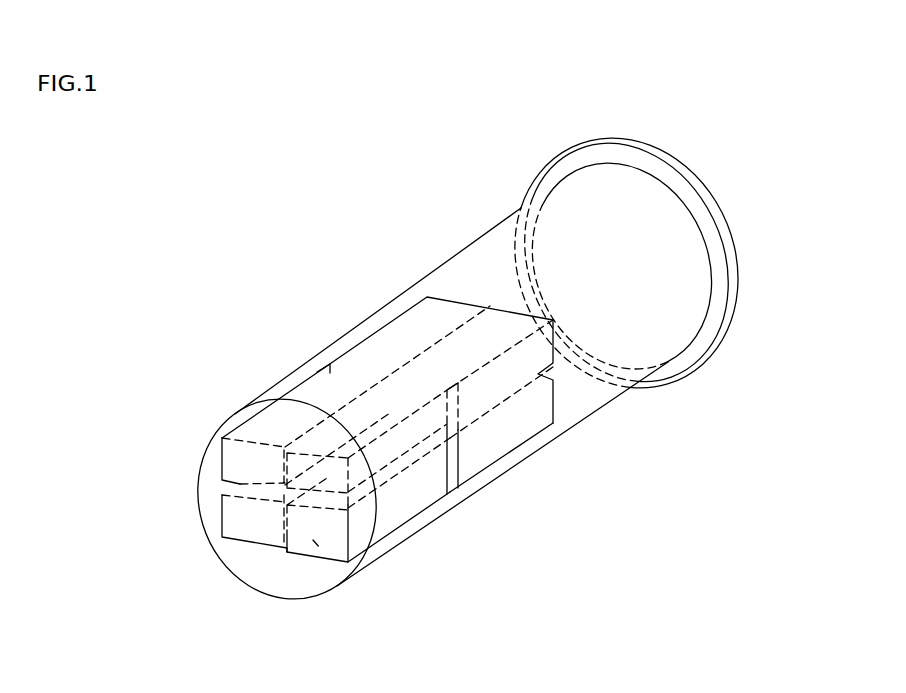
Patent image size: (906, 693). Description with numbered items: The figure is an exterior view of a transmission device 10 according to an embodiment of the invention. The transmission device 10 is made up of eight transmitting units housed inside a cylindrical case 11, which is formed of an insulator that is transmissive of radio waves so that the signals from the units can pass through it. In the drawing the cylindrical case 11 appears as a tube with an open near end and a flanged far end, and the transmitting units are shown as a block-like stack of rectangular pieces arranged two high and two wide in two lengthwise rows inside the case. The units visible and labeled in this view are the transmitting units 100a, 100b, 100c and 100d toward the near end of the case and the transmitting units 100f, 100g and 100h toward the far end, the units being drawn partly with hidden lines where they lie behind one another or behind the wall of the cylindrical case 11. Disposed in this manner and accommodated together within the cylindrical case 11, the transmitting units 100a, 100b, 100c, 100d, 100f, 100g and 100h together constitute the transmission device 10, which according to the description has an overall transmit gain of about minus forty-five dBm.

The transmission device 10 is at (268, 240).
The cylindrical case 11 is at (443, 263).
The transmitting unit 100a is at (225, 518).
The transmitting unit 100b is at (328, 560).
The transmitting unit 100c is at (272, 415).
The transmitting unit 100d is at (425, 488).
The transmitting unit 100f is at (513, 480).
The transmitting unit 100g is at (337, 323).
The transmitting unit 100h is at (573, 441).